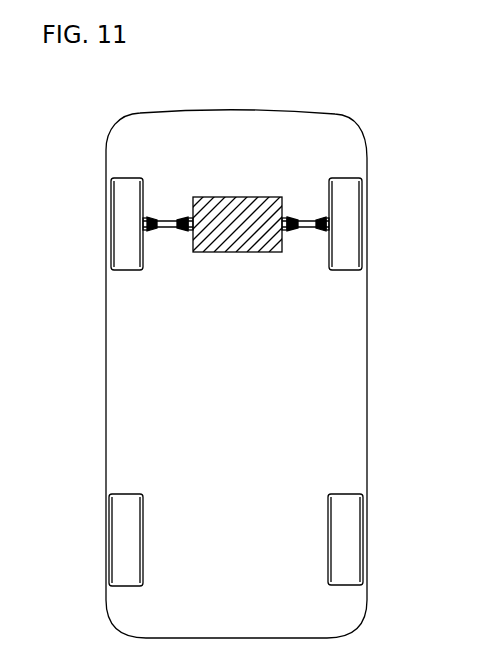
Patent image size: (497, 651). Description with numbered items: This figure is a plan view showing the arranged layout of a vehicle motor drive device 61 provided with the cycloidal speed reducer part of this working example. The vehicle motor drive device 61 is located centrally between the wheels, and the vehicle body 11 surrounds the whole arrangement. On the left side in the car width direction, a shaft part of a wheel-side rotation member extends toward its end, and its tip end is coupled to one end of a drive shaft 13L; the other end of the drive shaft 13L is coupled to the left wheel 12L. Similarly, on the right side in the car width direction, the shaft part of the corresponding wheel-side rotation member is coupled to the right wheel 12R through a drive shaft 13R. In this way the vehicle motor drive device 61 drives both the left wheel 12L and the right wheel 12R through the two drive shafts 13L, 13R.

The vehicle body 11 is at (366, 371).
The left wheel 12L is at (127, 224).
The right wheel 12R is at (344, 226).
The drive shaft 13L is at (165, 229).
The drive shaft 13R is at (308, 229).
The vehicle motor drive device 61 is at (238, 197).